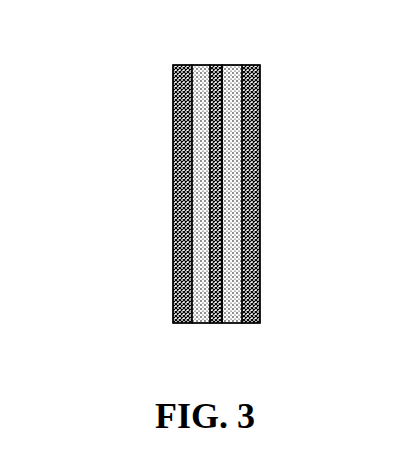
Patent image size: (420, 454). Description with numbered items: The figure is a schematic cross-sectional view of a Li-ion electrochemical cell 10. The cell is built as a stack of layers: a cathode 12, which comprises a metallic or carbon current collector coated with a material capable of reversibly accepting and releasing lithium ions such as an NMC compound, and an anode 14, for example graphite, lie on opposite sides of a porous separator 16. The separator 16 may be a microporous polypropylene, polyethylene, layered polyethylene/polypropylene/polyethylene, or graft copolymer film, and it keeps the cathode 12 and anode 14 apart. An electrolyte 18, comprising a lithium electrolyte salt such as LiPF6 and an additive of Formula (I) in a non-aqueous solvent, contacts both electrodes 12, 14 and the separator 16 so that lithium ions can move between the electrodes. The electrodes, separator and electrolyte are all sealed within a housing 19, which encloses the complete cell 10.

The Li-ion electrochemical cell 10 is at (128, 80).
The cathode 12 is at (172, 117).
The anode 14 is at (260, 103).
The porous separator 16 is at (232, 323).
The electrolyte 18 is at (200, 185).
The housing 19 is at (232, 65).